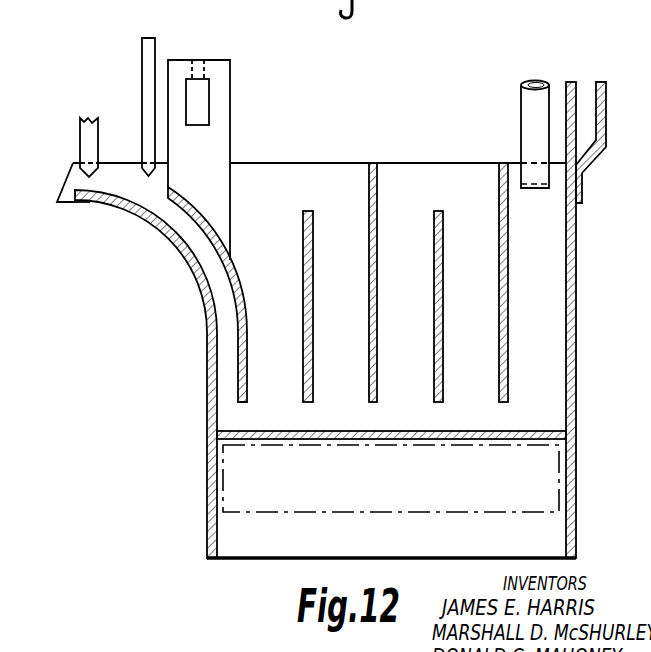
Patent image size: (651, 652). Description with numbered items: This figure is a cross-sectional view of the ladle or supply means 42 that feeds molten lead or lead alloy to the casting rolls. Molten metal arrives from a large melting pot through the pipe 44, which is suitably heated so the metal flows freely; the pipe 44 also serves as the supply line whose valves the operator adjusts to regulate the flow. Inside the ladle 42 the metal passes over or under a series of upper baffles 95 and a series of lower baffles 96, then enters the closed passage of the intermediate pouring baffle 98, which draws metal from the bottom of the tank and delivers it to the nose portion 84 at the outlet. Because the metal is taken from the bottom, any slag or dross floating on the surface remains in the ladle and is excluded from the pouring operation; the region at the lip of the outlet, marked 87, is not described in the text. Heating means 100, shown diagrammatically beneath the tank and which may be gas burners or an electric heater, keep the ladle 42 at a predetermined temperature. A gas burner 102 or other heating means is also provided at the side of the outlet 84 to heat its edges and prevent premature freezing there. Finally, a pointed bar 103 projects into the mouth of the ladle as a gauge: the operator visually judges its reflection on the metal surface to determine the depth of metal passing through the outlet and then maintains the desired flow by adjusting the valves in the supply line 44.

The ladle or supply means 42 is at (607, 360).
The pipe 44 is at (524, 82).
The nose portion 84 is at (70, 172).
The edge of plate 87 is at (82, 203).
The upper baffles 95 is at (377, 219).
The lower baffles 96 is at (313, 322).
The intermediate pouring baffle 98 is at (247, 322).
The heating means 100 is at (468, 503).
The gas burner 102 is at (80, 130).
The pointed bar 103 is at (155, 46).